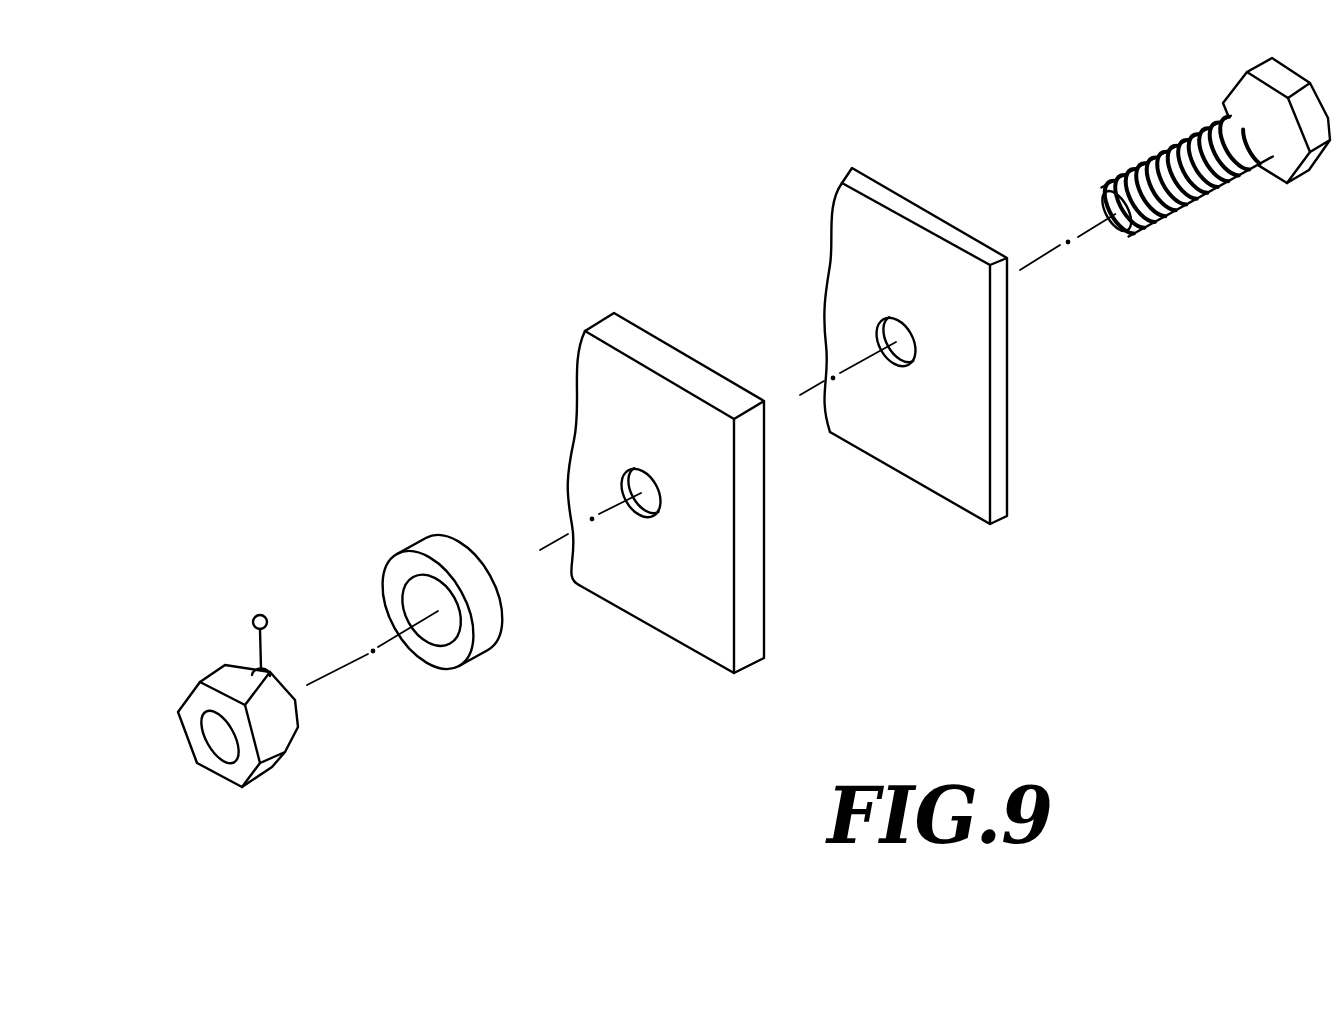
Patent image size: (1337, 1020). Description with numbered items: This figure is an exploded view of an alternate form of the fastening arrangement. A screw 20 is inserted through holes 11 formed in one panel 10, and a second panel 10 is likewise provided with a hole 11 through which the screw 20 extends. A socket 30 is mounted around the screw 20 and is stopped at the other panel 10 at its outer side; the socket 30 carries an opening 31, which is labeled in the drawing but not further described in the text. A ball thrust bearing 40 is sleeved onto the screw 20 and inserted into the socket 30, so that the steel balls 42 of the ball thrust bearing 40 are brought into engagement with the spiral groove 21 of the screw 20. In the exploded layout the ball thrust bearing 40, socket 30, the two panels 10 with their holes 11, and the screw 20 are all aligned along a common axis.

The panel 10 is at (703, 638).
The holes 11 is at (641, 499).
The screw 20 is at (1179, 171).
The spiral groove 21 is at (1158, 158).
The socket 30 is at (432, 576).
The washer opening 31 is at (414, 587).
The ball thrust bearing 40 is at (261, 768).
The steel balls 42 is at (270, 613).